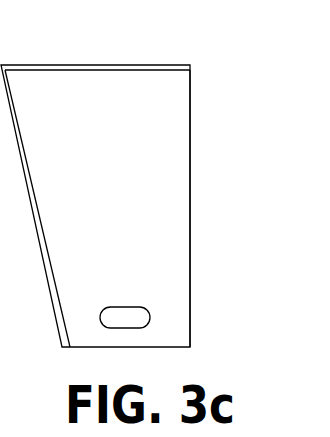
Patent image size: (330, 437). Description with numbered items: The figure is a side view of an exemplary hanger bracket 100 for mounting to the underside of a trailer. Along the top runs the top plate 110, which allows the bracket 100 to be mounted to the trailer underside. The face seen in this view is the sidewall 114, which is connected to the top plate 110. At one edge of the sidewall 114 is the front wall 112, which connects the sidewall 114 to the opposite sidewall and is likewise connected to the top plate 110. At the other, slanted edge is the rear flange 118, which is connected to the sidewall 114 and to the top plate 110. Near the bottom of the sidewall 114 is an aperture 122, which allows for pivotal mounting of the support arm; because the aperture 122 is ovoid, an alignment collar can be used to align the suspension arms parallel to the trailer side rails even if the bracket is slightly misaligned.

The hanger bracket 100 is at (190, 102).
The top plate 110 is at (181, 64).
The front wall 112 is at (190, 168).
The sidewall 114 is at (148, 277).
The rear flange 118 is at (27, 157).
The aperture 122 is at (138, 318).